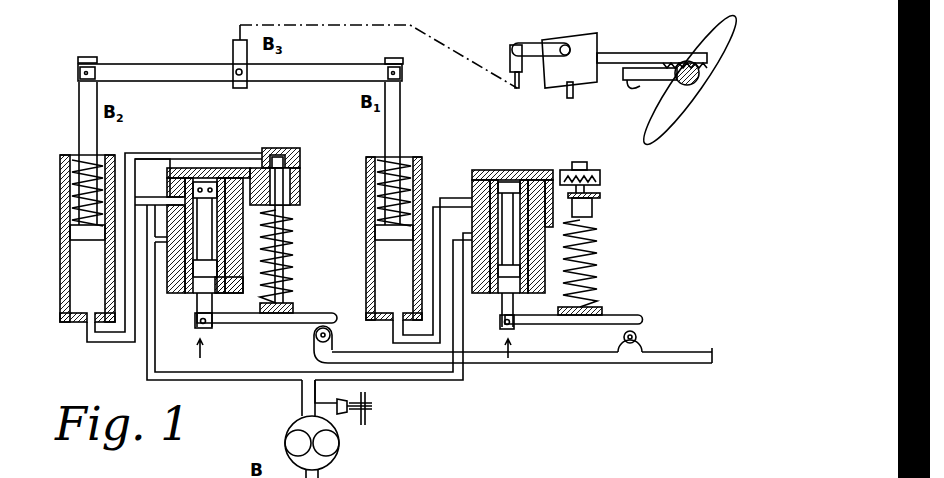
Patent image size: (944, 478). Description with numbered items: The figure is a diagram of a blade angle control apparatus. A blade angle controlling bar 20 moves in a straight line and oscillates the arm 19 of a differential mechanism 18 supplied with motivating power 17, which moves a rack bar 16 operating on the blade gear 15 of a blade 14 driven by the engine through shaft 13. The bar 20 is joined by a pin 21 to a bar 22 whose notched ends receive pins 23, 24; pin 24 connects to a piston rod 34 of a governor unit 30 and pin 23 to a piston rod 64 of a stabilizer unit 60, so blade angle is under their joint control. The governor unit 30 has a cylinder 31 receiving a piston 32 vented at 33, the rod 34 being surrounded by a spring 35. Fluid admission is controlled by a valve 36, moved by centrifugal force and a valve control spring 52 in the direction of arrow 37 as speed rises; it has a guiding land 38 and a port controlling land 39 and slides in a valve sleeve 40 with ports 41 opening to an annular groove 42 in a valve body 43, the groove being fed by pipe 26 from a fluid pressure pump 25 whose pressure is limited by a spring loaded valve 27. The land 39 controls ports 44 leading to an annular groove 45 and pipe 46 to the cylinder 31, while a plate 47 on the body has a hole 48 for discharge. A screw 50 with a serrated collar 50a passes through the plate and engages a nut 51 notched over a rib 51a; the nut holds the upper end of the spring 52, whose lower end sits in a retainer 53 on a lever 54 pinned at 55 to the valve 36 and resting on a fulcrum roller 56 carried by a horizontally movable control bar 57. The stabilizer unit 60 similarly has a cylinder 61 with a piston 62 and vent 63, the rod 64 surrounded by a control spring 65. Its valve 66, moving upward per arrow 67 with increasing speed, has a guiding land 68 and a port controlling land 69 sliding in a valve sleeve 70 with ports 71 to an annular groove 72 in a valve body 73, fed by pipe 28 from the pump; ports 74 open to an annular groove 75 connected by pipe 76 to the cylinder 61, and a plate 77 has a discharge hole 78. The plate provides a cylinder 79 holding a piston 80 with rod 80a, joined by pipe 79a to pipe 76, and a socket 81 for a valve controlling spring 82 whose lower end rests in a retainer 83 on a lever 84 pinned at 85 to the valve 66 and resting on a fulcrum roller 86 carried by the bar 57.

The shaft 13 is at (630, 82).
The blade 14 is at (706, 84).
The blade gear 15 is at (680, 82).
The rack bar 16 is at (644, 53).
The motivating power 17 is at (574, 95).
The differential mechanism 18 is at (547, 85).
The arm 19 is at (528, 43).
The blade angle controlling bar 20 is at (233, 50).
The pin 21 is at (237, 75).
The bar 22 is at (180, 82).
The pin 23 is at (78, 74).
The pin 24 is at (403, 74).
The fluid pressure pump 25 is at (338, 452).
The pipe 26 is at (434, 381).
The spring loaded valve 27 is at (352, 414).
The pipe 28 is at (226, 381).
The governor unit 30 is at (475, 131).
The cylinder 31 is at (366, 260).
The piston 32 is at (375, 232).
The vent 33 is at (366, 164).
The piston rod 34 is at (401, 105).
The spring 35 is at (375, 186).
The valve 36 is at (514, 306).
The arrow 37 is at (511, 345).
The guiding land 38 is at (530, 270).
The port controlling land 39 is at (520, 169).
The valve sleeve 40 is at (500, 322).
The ports 41 is at (520, 238).
The annular groove 42 is at (468, 232).
The valve body 43 is at (460, 298).
The ports 44 is at (540, 169).
The annular groove 45 is at (470, 205).
The pipe 46 is at (393, 330).
The plate 47 is at (480, 169).
The hole 48 is at (504, 169).
The screw 50 is at (588, 168).
The serrated collar 50a is at (601, 180).
The nut 51 is at (600, 196).
The rib 51a is at (571, 170).
The valve control spring 52 is at (600, 238).
The retainer 53 is at (602, 306).
The lever 54 is at (566, 325).
The pin 55 is at (497, 340).
The fulcrum roller 56 is at (637, 337).
The control bar 57 is at (314, 358).
The stabilizer unit 60 is at (190, 137).
The cylinder 61 is at (60, 268).
The piston 62 is at (70, 238).
The vent 63 is at (60, 172).
The rod 64 is at (78, 108).
The control spring 65 is at (72, 213).
The valve 66 is at (197, 299).
The arrow 67 is at (199, 347).
The guiding land 68 is at (217, 267).
The port controlling land 69 is at (215, 180).
The valve sleeve 70 is at (213, 302).
The ports 71 is at (218, 240).
The annular groove 72 is at (160, 230).
The valve body 73 is at (240, 284).
The ports 74 is at (198, 168).
The annular groove 75 is at (167, 186).
The pipe 76 is at (87, 338).
The plate 77 is at (167, 172).
The hole 78 is at (215, 168).
The cylinder 79 is at (298, 150).
The pipe 79a is at (153, 158).
The piston 80 is at (287, 163).
The rod 80a is at (295, 202).
The socket 81 is at (292, 193).
The valve controlling spring 82 is at (294, 246).
The retainer 83 is at (294, 302).
The lever 84 is at (320, 314).
The pin 85 is at (195, 321).
The fulcrum roller 86 is at (316, 335).